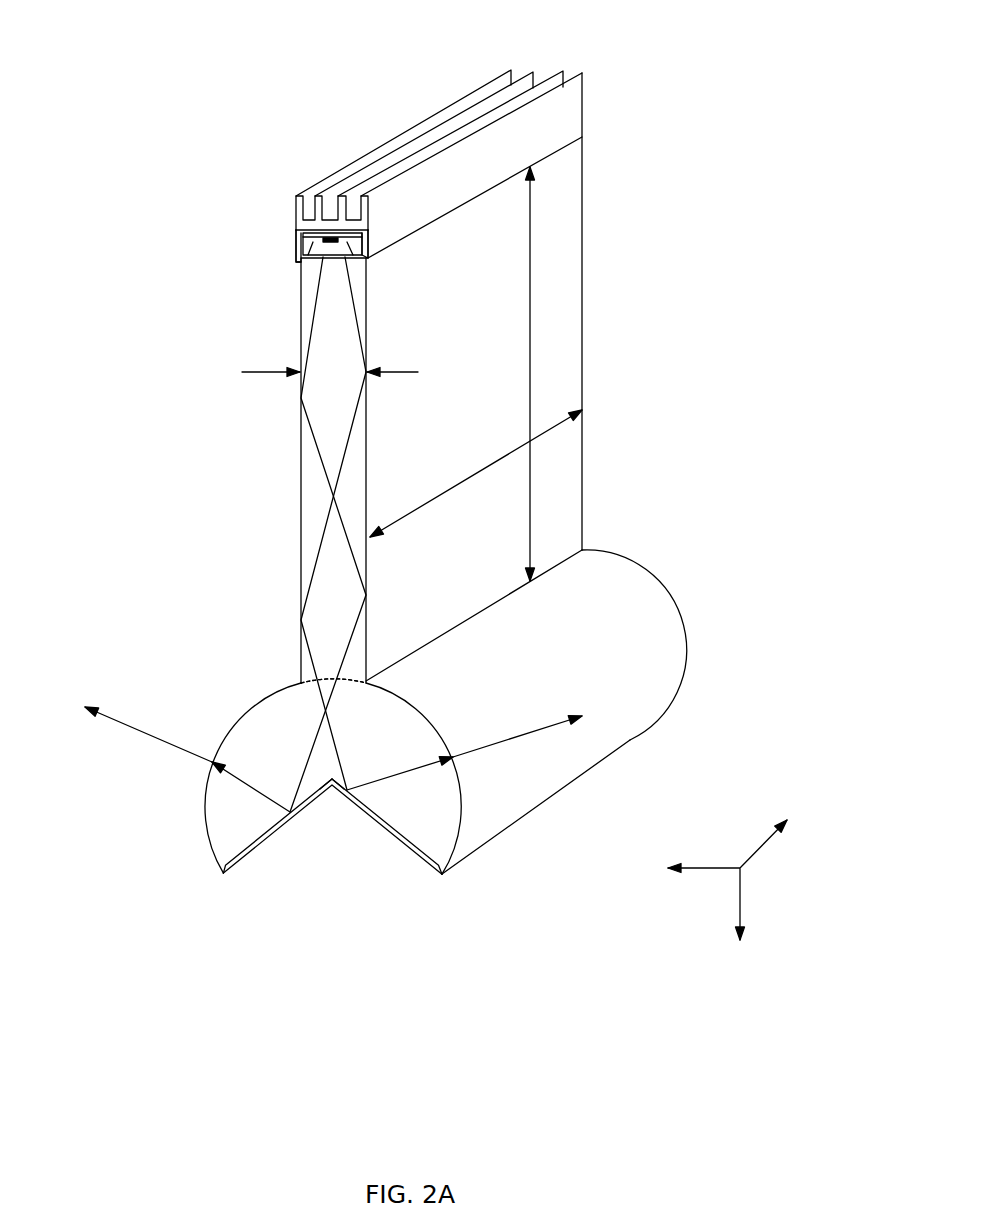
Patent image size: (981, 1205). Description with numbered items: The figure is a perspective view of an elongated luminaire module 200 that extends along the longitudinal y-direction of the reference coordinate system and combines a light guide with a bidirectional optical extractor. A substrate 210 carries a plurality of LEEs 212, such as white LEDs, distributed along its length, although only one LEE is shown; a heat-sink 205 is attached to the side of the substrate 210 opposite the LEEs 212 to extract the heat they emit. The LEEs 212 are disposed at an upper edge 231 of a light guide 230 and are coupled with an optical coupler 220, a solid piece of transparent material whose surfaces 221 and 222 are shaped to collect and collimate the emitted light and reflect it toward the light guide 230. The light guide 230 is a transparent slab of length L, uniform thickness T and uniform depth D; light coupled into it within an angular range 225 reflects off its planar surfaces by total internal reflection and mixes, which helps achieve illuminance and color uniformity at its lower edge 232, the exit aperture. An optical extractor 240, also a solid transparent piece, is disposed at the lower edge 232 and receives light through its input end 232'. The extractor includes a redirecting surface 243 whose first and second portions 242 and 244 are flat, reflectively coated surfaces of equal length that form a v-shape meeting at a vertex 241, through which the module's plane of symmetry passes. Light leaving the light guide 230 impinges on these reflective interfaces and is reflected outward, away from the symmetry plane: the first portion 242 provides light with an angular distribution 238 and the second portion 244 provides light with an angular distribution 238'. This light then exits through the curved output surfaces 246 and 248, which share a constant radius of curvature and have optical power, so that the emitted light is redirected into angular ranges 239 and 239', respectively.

The luminaire module 200 is at (118, 107).
The heat-sink 205 is at (587, 95).
The substrate 210 is at (333, 196).
The LEEs 212 is at (333, 237).
The optical coupler 220 is at (296, 230).
The surface of optical coupler 221 is at (368, 245).
The surface of optical coupler 222 is at (297, 239).
The angular range 225 is at (306, 440).
The light guide 230 is at (568, 231).
The upper edge of light guide 231 is at (330, 247).
The lower edge of light guide 232 is at (272, 647).
The input end of optical extractor 232' is at (346, 714).
The angular distribution 238 is at (424, 718).
The angular distribution 238' is at (185, 787).
The angular range 239 is at (531, 709).
The angular range 239' is at (142, 709).
The optical extractor 240 is at (653, 641).
The vertex 241 is at (332, 787).
The first portion of redirecting surface 242 is at (410, 868).
The redirecting surface 243 is at (366, 858).
The second portion of redirecting surface 244 is at (236, 872).
The output surface 246 is at (463, 817).
The output surface 248 is at (205, 828).